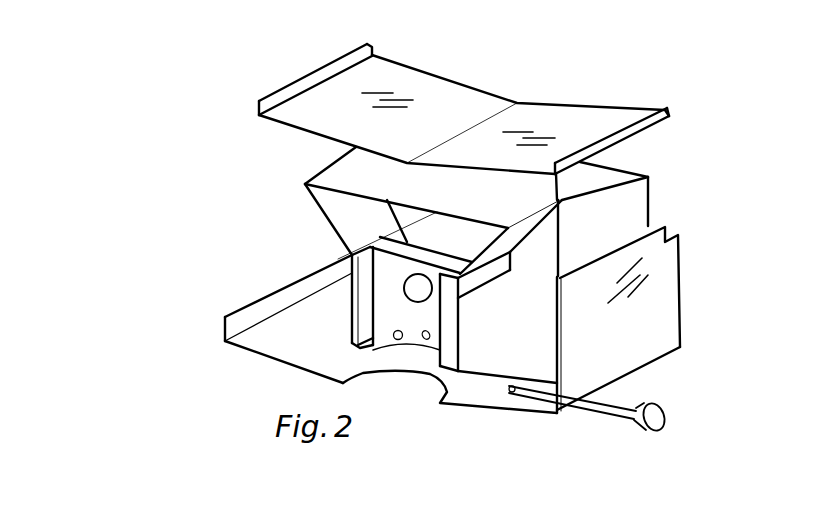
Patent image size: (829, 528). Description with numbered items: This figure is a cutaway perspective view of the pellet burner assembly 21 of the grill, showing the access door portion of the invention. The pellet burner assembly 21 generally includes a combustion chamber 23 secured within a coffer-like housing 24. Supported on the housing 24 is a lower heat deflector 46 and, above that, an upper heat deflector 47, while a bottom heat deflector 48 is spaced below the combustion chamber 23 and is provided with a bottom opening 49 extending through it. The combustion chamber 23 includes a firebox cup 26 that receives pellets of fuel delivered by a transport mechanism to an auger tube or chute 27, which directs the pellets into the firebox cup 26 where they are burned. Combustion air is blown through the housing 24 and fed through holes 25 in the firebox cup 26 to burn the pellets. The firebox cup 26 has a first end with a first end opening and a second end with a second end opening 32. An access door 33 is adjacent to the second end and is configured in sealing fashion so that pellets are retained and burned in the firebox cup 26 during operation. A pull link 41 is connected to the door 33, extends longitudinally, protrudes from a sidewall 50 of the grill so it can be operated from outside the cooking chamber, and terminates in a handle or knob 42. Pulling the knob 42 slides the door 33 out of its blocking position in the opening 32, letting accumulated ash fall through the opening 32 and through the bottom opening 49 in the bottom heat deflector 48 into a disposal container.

The pellet burner assembly 21 is at (170, 132).
The combustion chamber 23 is at (326, 299).
The housing 24 is at (488, 308).
The holes 25 is at (425, 339).
The firebox cup 26 is at (373, 323).
The auger tube or chute 27 is at (418, 287).
The second end opening 32 is at (383, 350).
The access door 33 is at (537, 372).
The pull link 41 is at (610, 403).
The handle or knob 42 is at (652, 424).
The lower heat deflector 46 is at (353, 185).
The upper heat deflector 47 is at (602, 122).
The bottom heat deflector 48 is at (290, 338).
The bottom opening 49 is at (330, 397).
The sidewall 50 is at (661, 303).